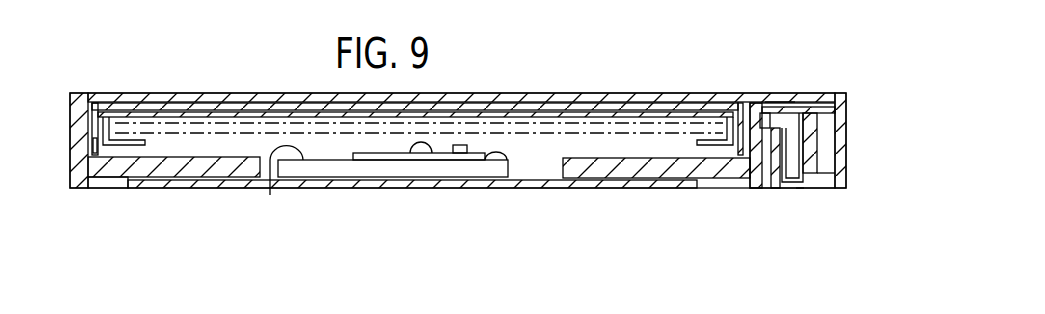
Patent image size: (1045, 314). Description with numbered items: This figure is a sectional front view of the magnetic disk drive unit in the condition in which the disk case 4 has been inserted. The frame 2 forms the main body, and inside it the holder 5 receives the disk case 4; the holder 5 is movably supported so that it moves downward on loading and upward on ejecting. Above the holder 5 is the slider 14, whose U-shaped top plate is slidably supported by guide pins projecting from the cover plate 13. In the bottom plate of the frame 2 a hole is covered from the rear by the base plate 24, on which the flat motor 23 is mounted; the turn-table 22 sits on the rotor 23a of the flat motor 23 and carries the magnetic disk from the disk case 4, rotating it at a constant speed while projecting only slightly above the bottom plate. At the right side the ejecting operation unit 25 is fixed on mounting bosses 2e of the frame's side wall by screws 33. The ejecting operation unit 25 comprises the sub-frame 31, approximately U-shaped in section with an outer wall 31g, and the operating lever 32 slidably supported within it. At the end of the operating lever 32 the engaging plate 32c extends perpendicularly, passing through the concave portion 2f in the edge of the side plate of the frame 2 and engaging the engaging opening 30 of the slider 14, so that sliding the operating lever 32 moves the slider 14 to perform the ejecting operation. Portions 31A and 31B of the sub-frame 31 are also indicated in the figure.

The frame 2 is at (71, 152).
The mounting bosses 2e is at (771, 185).
The concave portion 2f is at (773, 98).
The disk case 4 is at (630, 135).
The holder 5 is at (620, 122).
The cover plate 13 is at (760, 93).
The slider 14 is at (662, 97).
The turn-table 22 is at (508, 170).
The flat motor 23 is at (402, 165).
The rotor 23a is at (270, 195).
The base plate 24 is at (195, 178).
The ejecting operation unit 25 is at (800, 190).
The engaging opening 30 is at (690, 97).
The sub-frame 31 is at (846, 182).
The holder leg 31A is at (752, 170).
The holder bottom 31B is at (822, 180).
The outer wall 31g is at (843, 138).
The operating lever 32 is at (817, 143).
The engaging plate 32c is at (743, 97).
The screws 33 is at (795, 178).